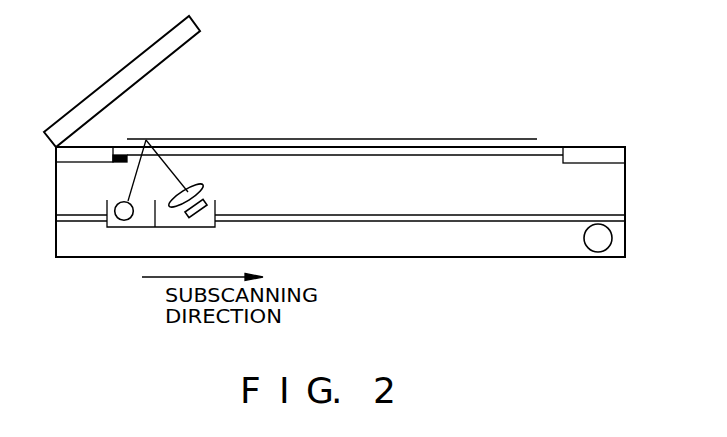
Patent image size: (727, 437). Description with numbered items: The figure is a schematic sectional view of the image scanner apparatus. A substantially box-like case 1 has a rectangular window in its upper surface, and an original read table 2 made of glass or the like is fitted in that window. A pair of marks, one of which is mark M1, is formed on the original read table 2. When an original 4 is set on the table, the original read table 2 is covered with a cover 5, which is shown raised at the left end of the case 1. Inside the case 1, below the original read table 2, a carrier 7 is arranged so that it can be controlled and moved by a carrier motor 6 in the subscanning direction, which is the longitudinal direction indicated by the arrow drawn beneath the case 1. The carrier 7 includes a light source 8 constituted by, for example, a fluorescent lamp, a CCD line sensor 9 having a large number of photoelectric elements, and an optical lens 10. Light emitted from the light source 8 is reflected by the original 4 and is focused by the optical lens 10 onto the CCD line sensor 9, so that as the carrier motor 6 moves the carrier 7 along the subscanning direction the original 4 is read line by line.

The case 1 is at (627, 182).
The original read table 2 is at (522, 156).
The original 4 is at (377, 139).
The cover 5 is at (128, 72).
The carrier motor 6 is at (612, 243).
The carrier 7 is at (110, 248).
The light source 8 is at (113, 227).
The CCD line sensor 9 is at (207, 203).
The optical lens 10 is at (188, 187).
The mark M1 is at (122, 162).